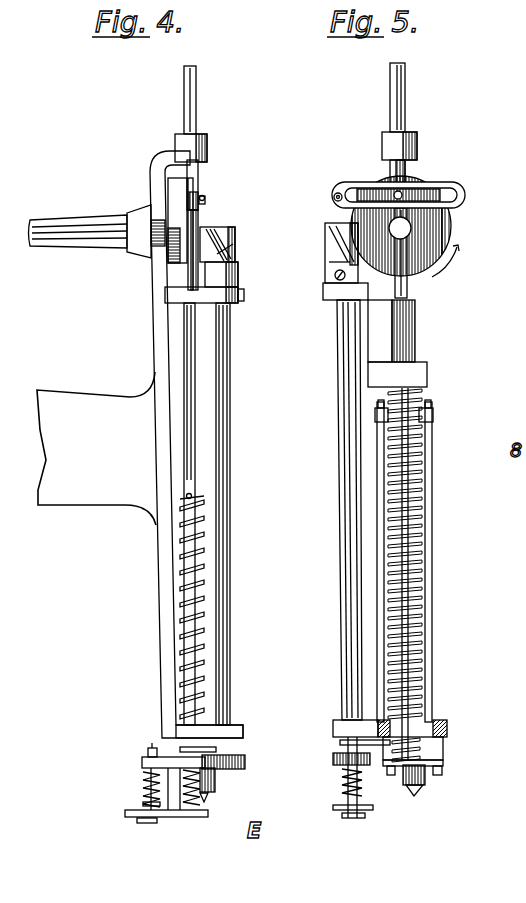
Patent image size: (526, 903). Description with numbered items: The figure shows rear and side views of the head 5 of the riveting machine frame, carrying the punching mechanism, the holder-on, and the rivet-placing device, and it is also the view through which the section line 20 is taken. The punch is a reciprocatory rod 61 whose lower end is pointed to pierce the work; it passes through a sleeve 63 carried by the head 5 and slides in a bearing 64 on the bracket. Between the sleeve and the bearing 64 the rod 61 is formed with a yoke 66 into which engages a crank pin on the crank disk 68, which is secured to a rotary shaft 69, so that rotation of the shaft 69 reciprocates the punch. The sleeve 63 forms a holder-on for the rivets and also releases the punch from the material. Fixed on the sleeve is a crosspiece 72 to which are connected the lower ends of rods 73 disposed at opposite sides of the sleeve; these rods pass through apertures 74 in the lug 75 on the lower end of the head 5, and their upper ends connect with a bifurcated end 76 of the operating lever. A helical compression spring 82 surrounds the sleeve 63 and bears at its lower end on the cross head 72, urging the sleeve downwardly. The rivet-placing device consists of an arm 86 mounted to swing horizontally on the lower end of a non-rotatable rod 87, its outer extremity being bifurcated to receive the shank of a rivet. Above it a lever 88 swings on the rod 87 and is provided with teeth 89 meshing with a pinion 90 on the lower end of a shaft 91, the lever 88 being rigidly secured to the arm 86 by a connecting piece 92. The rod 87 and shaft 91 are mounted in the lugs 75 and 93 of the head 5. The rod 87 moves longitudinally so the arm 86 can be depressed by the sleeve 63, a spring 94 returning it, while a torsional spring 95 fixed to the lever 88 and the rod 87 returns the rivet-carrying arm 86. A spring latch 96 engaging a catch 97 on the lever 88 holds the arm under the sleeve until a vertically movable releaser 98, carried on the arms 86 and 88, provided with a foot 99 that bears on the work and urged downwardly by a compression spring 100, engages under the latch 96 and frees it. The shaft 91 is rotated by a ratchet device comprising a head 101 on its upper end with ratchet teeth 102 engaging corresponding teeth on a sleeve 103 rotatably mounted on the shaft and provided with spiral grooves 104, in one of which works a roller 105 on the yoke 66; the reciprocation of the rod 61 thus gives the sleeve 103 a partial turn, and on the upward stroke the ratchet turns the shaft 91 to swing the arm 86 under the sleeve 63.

In FIG. 4, the head 5 is at (158, 594).
In FIG. 4, the shaft 20 is at (237, 741).
In FIG. 5, the shaft 20 is at (392, 742).
In FIG. 4, the reciprocatory rod 61 is at (199, 98).
In FIG. 5, the reciprocatory rod 61 is at (408, 290).
In FIG. 5, the sleeve 63 is at (427, 781).
In FIG. 4, the bearing 64 is at (206, 143).
In FIG. 5, the bearing 64 is at (524, 140).
In FIG. 5, the yoke 66 is at (455, 187).
In FIG. 4, the crank disk 68 is at (175, 257).
In FIG. 5, the crank disk 68 is at (442, 227).
In FIG. 4, the rotary shaft 69 is at (97, 226).
In FIG. 5, the rotary shaft 69 is at (459, 261).
In FIG. 5, the crosspiece 72 is at (397, 777).
In FIG. 5, the rods 73 is at (435, 681).
In FIG. 5, the apertures 74 is at (440, 720).
In FIG. 4, the lug 75 is at (243, 730).
In FIG. 5, the lug 75 is at (448, 727).
In FIG. 5, the bifurcated end 76 is at (525, 415).
In FIG. 5, the helical compression spring 82 is at (424, 543).
In FIG. 4, the arm 86 is at (187, 816).
In FIG. 5, the arm 86 is at (333, 810).
In FIG. 4, the non-rotatable rod 87 is at (190, 658).
In FIG. 4, the lever 88 is at (175, 760).
In FIG. 4, the teeth 89 is at (213, 778).
In FIG. 4, the pinion 90 is at (245, 763).
In FIG. 4, the shaft 91 is at (233, 648).
In FIG. 5, the shaft 91 is at (344, 614).
In FIG. 4, the connecting piece 92 is at (172, 795).
In FIG. 4, the lug 93 is at (244, 296).
In FIG. 5, the lug 93 is at (323, 291).
In FIG. 4, the spring 94 is at (197, 604).
In FIG. 4, the torsional spring 95 is at (208, 794).
In FIG. 5, the torsional spring 95 is at (345, 787).
In FIG. 5, the spring latch 96 is at (345, 745).
In FIG. 4, the catch 97 is at (147, 752).
In FIG. 4, the releaser 98 is at (142, 804).
In FIG. 4, the foot 99 is at (149, 824).
In FIG. 5, the foot 99 is at (344, 819).
In FIG. 4, the compression spring 100 is at (142, 780).
In FIG. 4, the head 101 is at (228, 273).
In FIG. 5, the head 101 is at (323, 277).
In FIG. 4, the ratchet teeth 102 is at (225, 254).
In FIG. 5, the ratchet teeth 102 is at (325, 262).
In FIG. 4, the sleeve 103 is at (222, 238).
In FIG. 5, the sleeve 103 is at (325, 248).
In FIG. 4, the spiral grooves 104 is at (205, 240).
In FIG. 5, the spiral grooves 104 is at (328, 230).
In FIG. 4, the roller 105 is at (204, 196).
In FIG. 5, the roller 105 is at (337, 193).